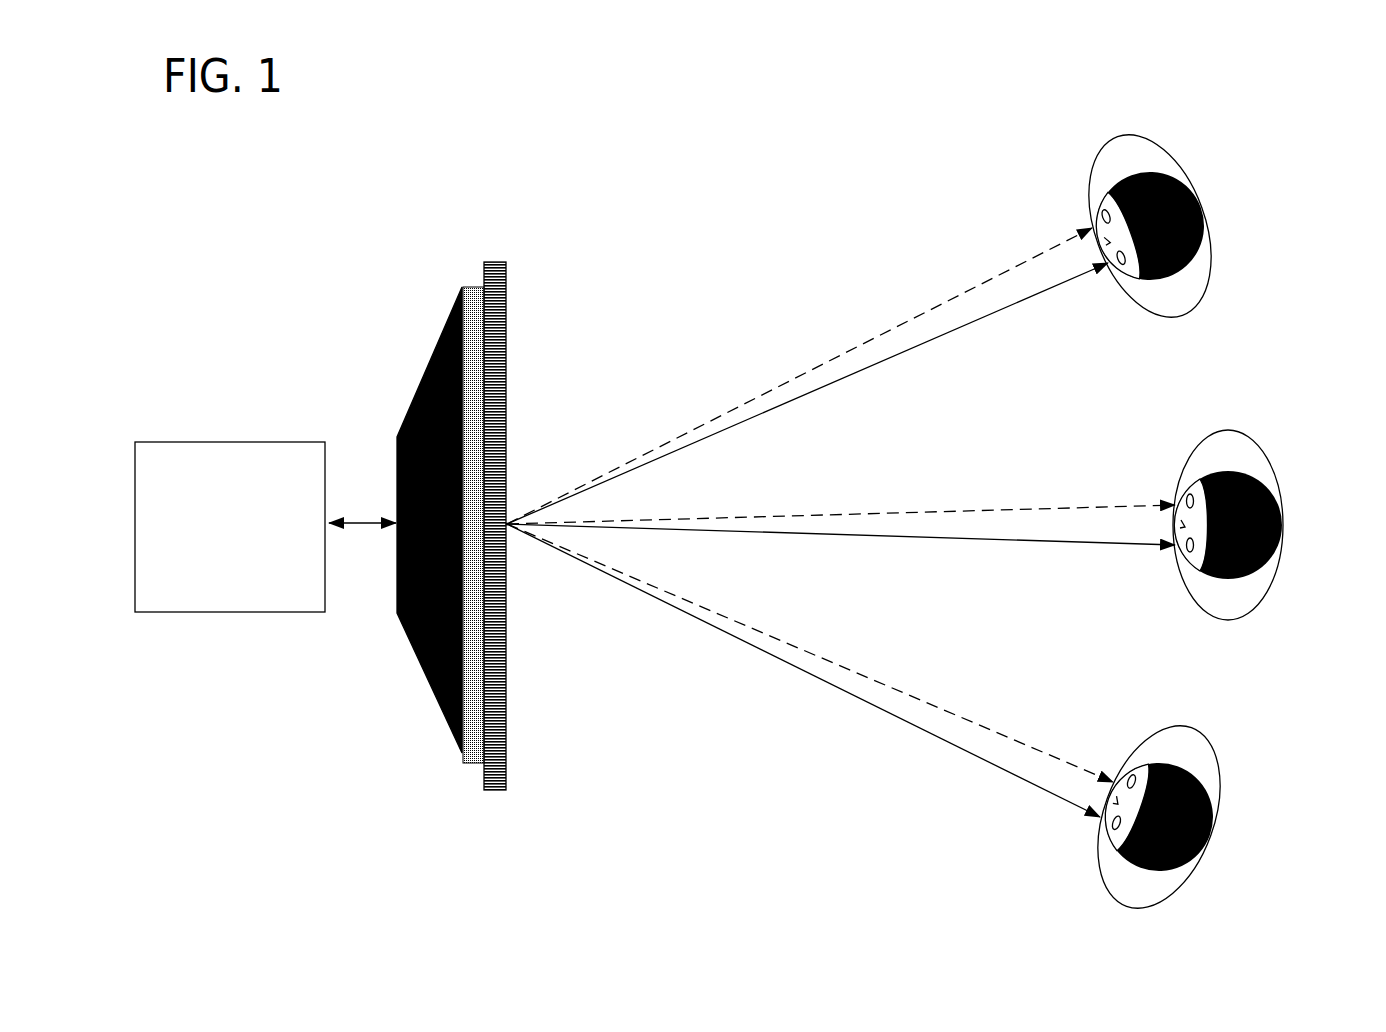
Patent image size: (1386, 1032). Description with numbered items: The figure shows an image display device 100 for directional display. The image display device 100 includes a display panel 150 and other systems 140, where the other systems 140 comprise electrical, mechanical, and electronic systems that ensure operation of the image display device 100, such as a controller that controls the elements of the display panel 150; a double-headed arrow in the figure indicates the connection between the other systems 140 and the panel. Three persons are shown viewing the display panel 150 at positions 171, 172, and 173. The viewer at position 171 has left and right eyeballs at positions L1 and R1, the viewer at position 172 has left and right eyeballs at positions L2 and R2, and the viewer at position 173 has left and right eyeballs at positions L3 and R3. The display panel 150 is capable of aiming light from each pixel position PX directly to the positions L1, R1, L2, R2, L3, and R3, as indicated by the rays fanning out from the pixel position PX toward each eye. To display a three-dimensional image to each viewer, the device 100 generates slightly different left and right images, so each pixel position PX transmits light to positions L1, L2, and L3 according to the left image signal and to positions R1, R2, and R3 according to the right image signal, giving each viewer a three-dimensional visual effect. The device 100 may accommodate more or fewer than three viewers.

The image display device 100 is at (378, 513).
The other systems 140 is at (230, 527).
The display panel 150 is at (496, 262).
The position of first viewer 171 is at (1167, 226).
The position of second viewer 172 is at (1264, 525).
The position of third viewer 173 is at (1180, 817).
The pixel position PX is at (514, 510).
The right eyeball position of first viewer R1 is at (799, 361).
The left eyeball position of first viewer L1 is at (810, 393).
The right eyeball position of second viewer R2 is at (841, 495).
The left eyeball position of second viewer L2 is at (841, 555).
The right eyeball position of third viewer R3 is at (812, 653).
The left eyeball position of third viewer L3 is at (803, 686).